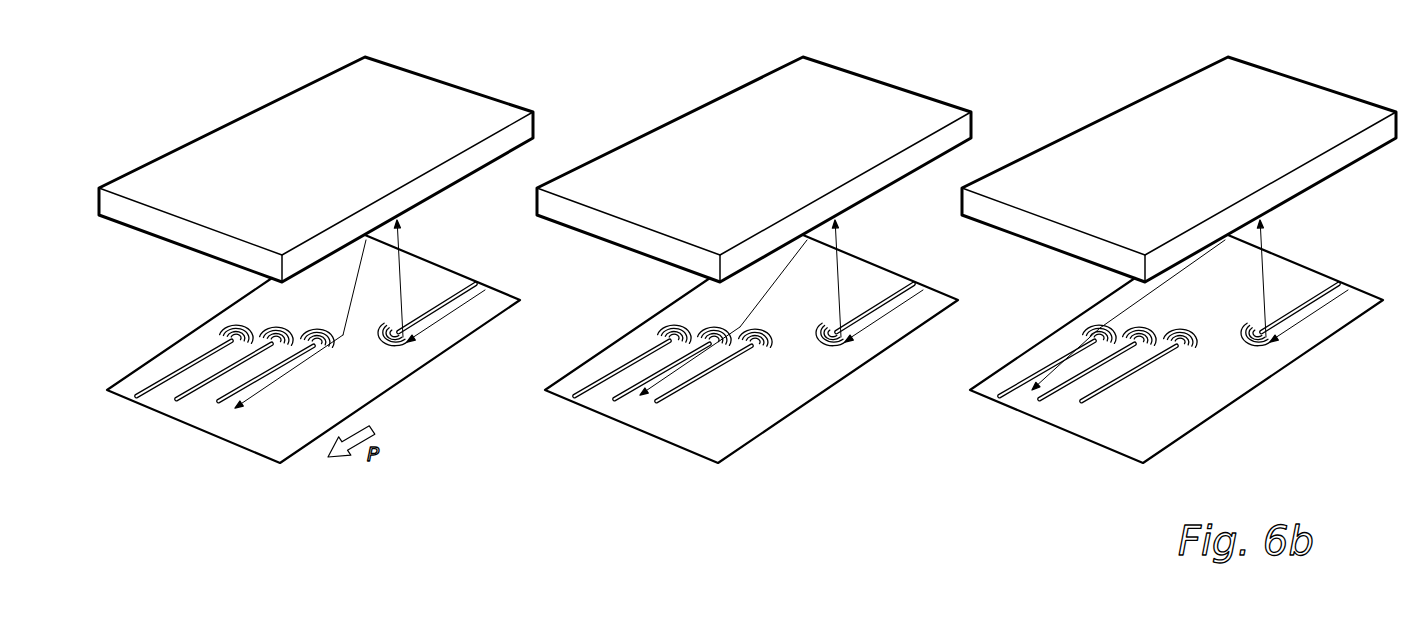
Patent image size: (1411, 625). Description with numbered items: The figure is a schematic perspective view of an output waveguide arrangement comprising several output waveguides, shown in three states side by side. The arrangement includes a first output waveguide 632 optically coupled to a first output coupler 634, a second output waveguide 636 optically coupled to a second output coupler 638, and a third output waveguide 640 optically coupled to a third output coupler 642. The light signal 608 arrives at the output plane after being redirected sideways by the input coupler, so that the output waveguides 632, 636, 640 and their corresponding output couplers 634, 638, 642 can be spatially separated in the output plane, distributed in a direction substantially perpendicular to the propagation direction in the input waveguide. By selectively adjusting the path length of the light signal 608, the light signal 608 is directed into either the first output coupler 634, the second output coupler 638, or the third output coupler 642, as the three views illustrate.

The light signal 608 is at (400, 267).
The first output waveguide 632 is at (247, 387).
The first output coupler 634 is at (320, 338).
The second output waveguide 636 is at (197, 390).
The second output coupler 638 is at (282, 330).
The third output waveguide 640 is at (153, 392).
The third output coupler 642 is at (237, 332).